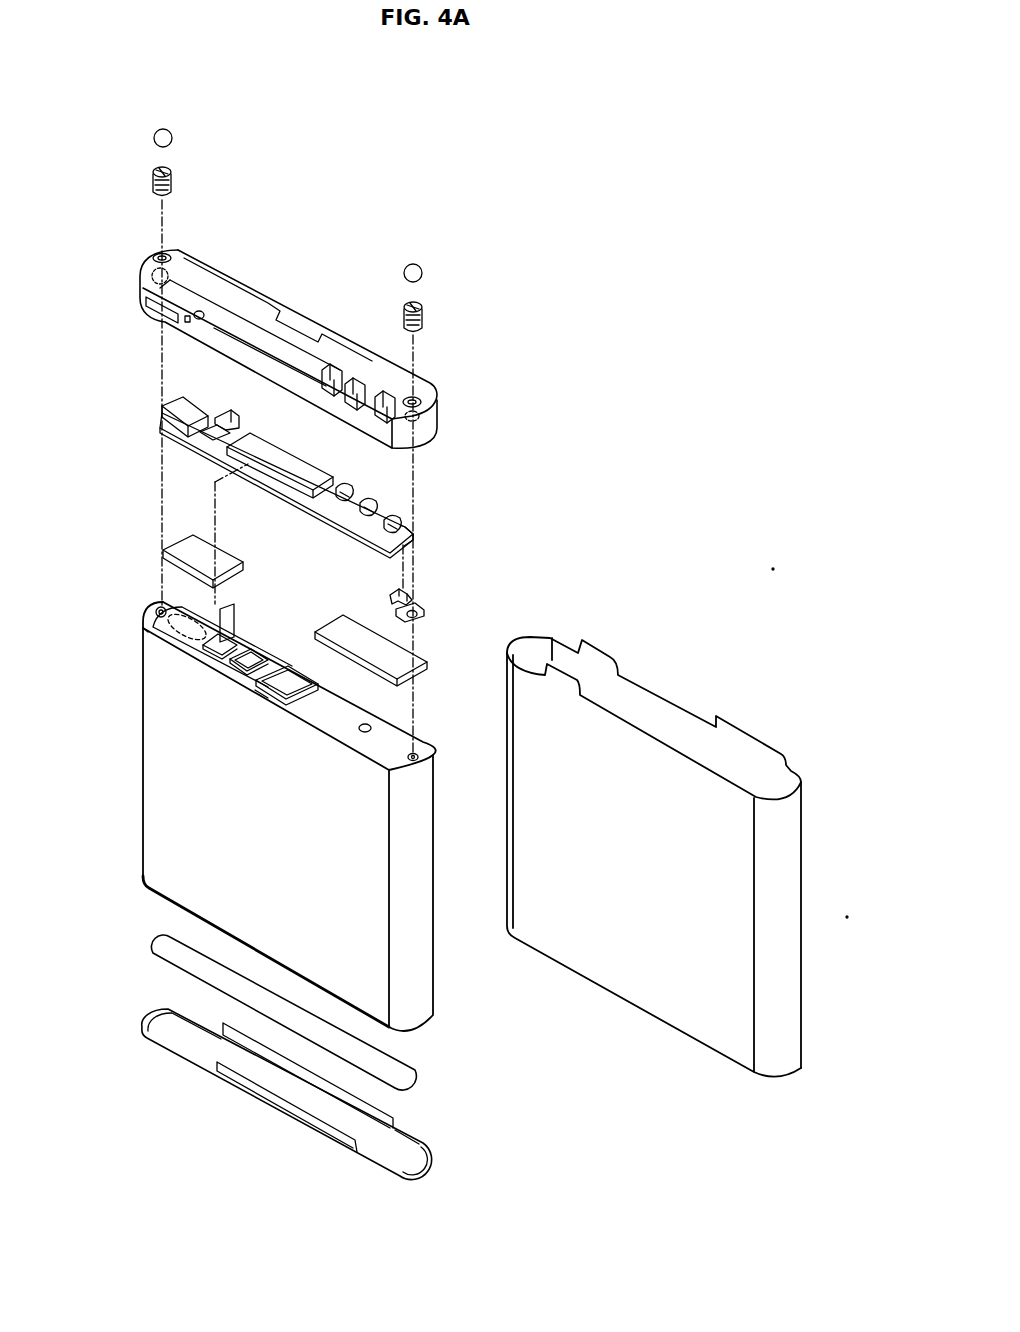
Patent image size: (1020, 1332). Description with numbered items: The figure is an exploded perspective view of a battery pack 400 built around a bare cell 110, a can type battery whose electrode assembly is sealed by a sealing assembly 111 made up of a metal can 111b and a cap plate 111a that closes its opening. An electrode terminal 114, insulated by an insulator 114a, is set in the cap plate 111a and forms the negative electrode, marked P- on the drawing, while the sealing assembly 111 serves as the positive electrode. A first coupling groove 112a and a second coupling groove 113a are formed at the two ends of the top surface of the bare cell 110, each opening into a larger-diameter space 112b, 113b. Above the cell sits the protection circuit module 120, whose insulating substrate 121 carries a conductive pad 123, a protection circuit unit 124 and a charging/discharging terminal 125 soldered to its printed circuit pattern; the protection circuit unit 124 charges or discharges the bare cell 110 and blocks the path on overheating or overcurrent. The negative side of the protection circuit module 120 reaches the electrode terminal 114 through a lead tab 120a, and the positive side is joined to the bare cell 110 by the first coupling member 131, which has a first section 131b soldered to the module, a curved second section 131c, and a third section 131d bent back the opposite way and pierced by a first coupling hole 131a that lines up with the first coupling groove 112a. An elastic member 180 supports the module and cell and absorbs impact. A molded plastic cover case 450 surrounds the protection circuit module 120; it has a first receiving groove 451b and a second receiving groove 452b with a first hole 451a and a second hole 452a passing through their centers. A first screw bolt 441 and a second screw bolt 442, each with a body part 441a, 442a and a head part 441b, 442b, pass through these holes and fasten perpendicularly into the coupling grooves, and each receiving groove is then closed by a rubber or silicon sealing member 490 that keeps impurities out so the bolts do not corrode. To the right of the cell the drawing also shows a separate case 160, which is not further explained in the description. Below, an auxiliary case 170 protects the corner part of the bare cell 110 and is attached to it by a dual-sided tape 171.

The battery pack 400 is at (682, 188).
The sealing member 490 is at (157, 120).
The second screw bolt 442 is at (128, 166).
The body part 442a is at (151, 180).
The head part 442b is at (154, 168).
The first screw bolt 441 is at (380, 300).
The body part 441a is at (405, 318).
The head part 441b is at (405, 305).
The cover case 450 is at (284, 342).
The second hole 452a is at (140, 279).
The second receiving groove 452b is at (152, 257).
The first hole 451a is at (440, 413).
The first receiving groove 451b is at (437, 401).
The protection circuit module 120 is at (308, 458).
The protection circuit unit 124 is at (186, 407).
The conductive pad 123 is at (228, 416).
The charging/discharging terminal 125 is at (392, 522).
The insulating substrate 121 is at (412, 531).
The elastic member 180 is at (164, 542).
The first coupling member 131 is at (419, 597).
The first coupling hole 131a is at (426, 613).
The first section 131b is at (410, 593).
The second section 131c is at (417, 596).
The third section 131d is at (420, 622).
The bare cell 110 is at (265, 805).
The sealing assembly 111 is at (166, 661).
The cap plate 111a is at (150, 637).
The can 111b is at (157, 702).
The second coupling groove 113a is at (152, 614).
The space 113b is at (156, 606).
The first coupling groove 112a is at (430, 758).
The space 112b is at (420, 752).
The lead tab 120a is at (241, 641).
The electrode terminal 114 is at (282, 700).
The insulator 114a is at (303, 687).
The negative electrode P- is at (262, 692).
The case 160 is at (667, 699).
The dual-sided tape 171 is at (155, 945).
The auxiliary case 170 is at (136, 1039).